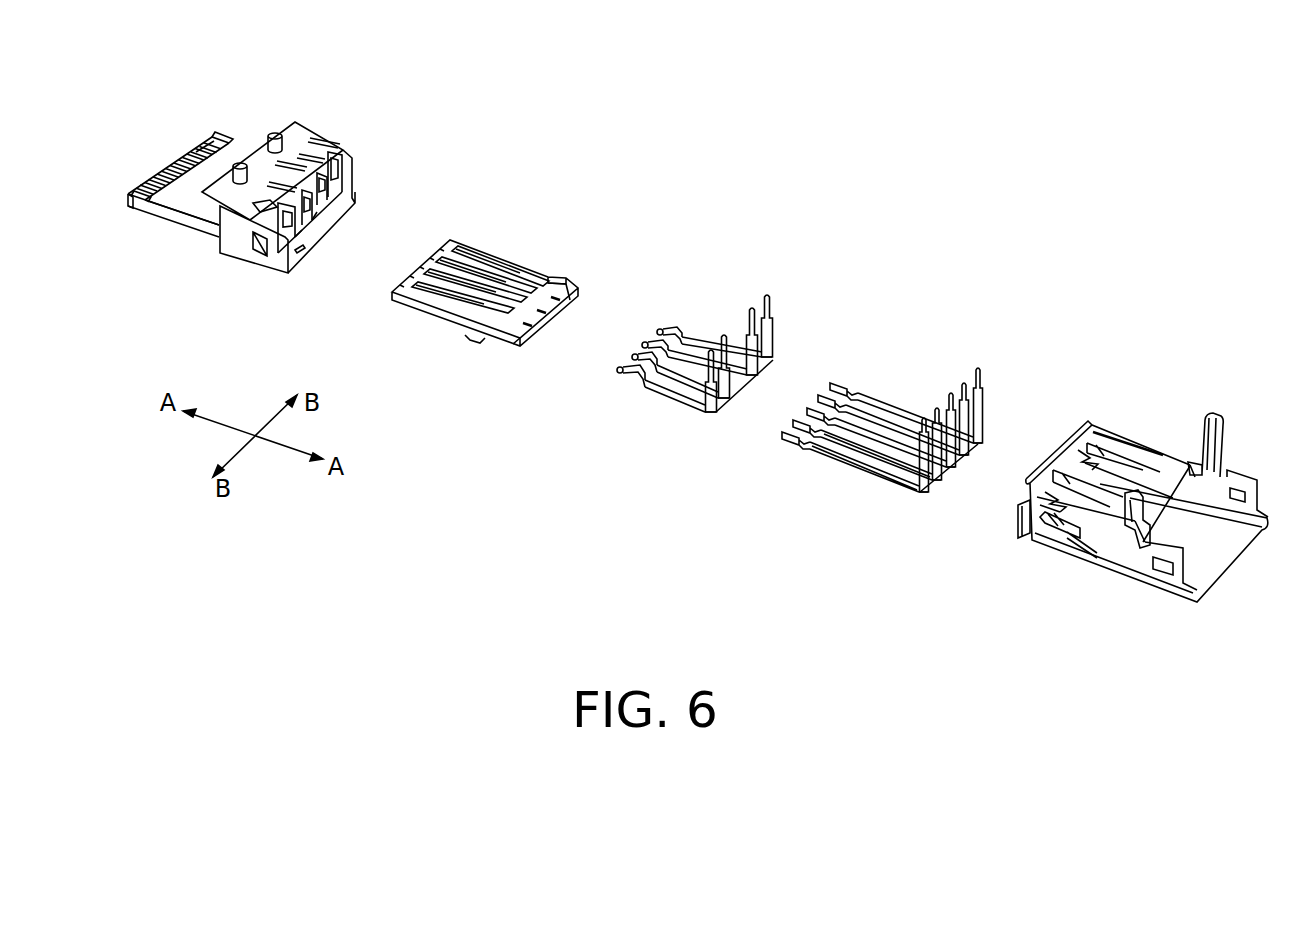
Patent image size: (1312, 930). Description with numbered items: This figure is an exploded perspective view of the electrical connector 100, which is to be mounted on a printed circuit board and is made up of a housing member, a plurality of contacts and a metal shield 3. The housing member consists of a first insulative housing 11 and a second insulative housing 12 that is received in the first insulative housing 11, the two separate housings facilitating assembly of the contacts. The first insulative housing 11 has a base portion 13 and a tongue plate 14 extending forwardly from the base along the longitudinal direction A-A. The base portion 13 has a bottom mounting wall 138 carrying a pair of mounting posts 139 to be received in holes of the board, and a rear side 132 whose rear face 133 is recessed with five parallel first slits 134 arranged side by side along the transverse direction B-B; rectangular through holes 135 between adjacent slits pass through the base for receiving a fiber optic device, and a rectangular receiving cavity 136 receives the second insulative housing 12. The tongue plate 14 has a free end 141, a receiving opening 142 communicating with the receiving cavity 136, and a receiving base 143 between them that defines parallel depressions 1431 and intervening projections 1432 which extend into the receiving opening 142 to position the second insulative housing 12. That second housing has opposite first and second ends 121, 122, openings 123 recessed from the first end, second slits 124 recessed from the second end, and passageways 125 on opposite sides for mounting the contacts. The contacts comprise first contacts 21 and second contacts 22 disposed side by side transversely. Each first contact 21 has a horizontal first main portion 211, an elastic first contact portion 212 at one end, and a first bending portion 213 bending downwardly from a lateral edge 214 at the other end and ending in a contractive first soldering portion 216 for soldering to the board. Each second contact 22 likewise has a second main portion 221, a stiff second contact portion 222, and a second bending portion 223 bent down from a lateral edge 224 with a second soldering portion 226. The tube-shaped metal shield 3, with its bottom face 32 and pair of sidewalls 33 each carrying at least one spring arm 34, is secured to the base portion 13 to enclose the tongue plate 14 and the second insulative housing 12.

The electrical connector 100 is at (232, 14).
The first insulative housing 11 is at (318, 112).
The base portion 13 is at (308, 145).
The rear side 132 is at (348, 152).
The rear face 133 is at (350, 173).
The first slits 134 is at (278, 228).
The through holes 135 is at (307, 215).
The receiving cavity 136 is at (333, 207).
The bottom mounting wall 138 is at (241, 168).
The mounting posts 139 is at (276, 134).
The tongue plate 14 is at (198, 135).
The free end 141 is at (158, 163).
The receiving opening 142 is at (188, 198).
The receiving base 143 is at (132, 197).
The depressions 1431 is at (183, 135).
The projections 1432 is at (223, 200).
The second insulative housing 12 is at (530, 228).
The first end 121 is at (438, 243).
The second end 122 is at (580, 293).
The openings 123 is at (433, 258).
The second slits 124 is at (555, 315).
The passageways 125 is at (477, 260).
The first contacts 21 is at (784, 290).
The first main portion 211 is at (665, 385).
The first contact portion 212 is at (622, 375).
The first bending portion 213 is at (710, 392).
The lateral edge 214 is at (715, 413).
The first soldering portion 216 is at (707, 350).
The second contacts 22 is at (916, 348).
The second main portion 221 is at (843, 463).
The second contact portion 222 is at (782, 437).
The second bending portion 223 is at (917, 473).
The lateral edge 224 is at (917, 500).
The second soldering portion 226 is at (957, 460).
The metal shield 3 is at (1125, 415).
The bottom face 32 is at (1172, 472).
The sidewalls 33 is at (1115, 553).
The spring arm 34 is at (1057, 527).